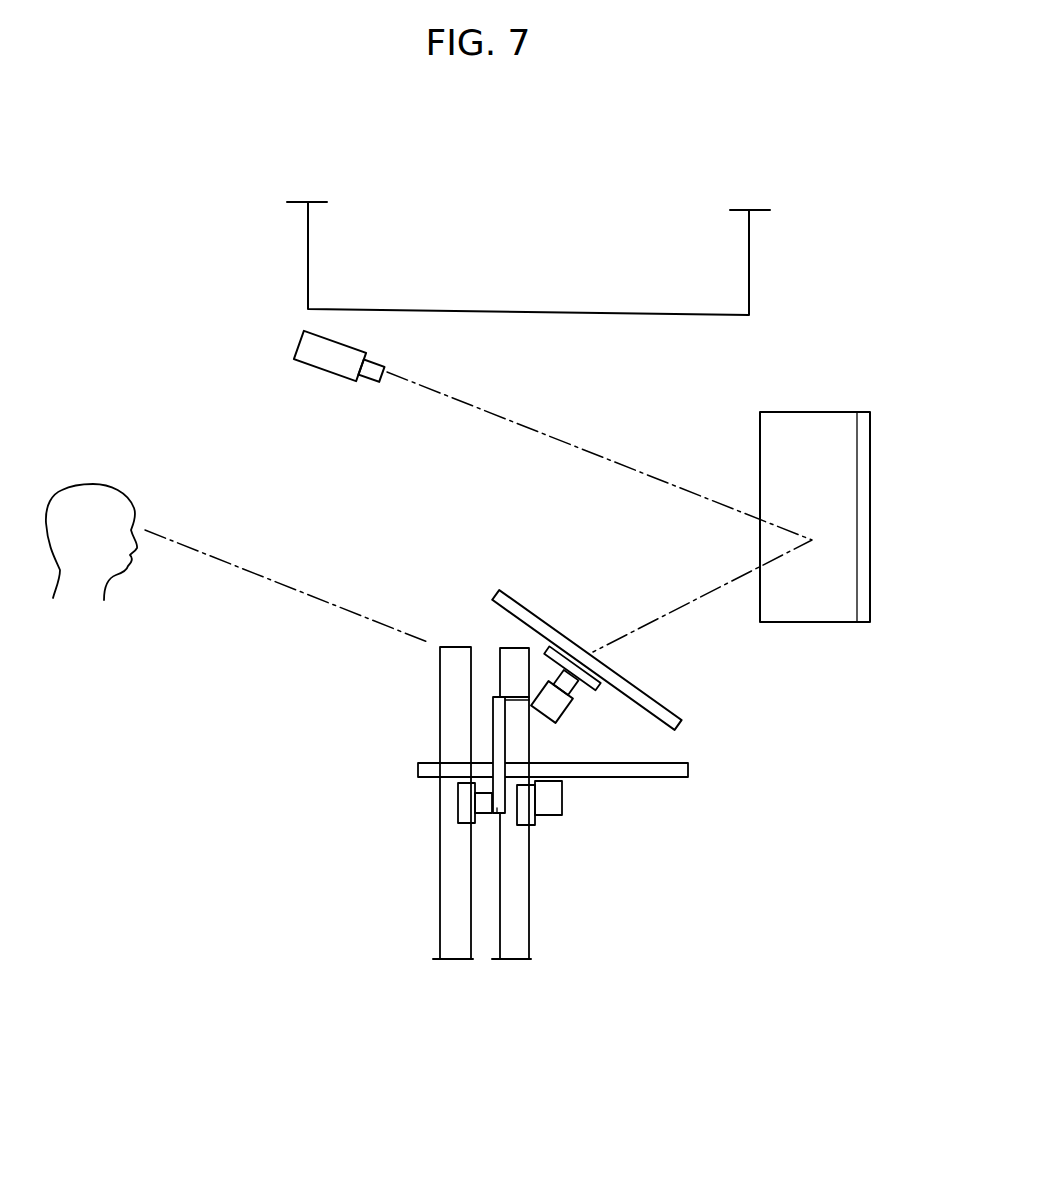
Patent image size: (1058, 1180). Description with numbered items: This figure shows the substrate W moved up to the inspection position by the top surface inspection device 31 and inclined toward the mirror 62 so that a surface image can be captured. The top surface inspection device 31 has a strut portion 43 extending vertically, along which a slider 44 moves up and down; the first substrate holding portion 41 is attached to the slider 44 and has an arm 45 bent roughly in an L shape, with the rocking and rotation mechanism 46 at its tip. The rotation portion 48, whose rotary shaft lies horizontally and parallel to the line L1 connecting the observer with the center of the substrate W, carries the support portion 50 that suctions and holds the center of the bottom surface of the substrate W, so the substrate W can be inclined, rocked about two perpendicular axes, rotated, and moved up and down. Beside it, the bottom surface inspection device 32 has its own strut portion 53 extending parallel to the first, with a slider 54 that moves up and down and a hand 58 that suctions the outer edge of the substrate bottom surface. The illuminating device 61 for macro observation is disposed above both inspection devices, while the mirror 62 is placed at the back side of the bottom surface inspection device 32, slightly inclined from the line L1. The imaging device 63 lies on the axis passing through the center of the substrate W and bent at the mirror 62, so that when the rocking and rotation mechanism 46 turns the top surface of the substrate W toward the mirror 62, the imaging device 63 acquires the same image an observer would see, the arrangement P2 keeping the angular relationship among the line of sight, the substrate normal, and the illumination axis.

The image display system P2 is at (868, 290).
The illuminating device 61 is at (750, 258).
The mirror 62 is at (870, 524).
The imaging device 63 is at (320, 360).
The line L1 is at (253, 572).
The substrate W is at (548, 625).
The top surface inspection device 31 is at (399, 790).
The bottom surface inspection device 32 is at (567, 826).
The first substrate holding portion 41 is at (493, 706).
The strut portion 43 is at (450, 907).
The slider 44 is at (460, 805).
The arm 45 is at (497, 808).
The rocking and rotation mechanism 46 is at (521, 700).
The rotation portion 48 is at (565, 712).
The support portion 50 is at (547, 642).
The strut portion 53 is at (555, 795).
The slider 54 is at (530, 818).
The hand 58 is at (445, 772).